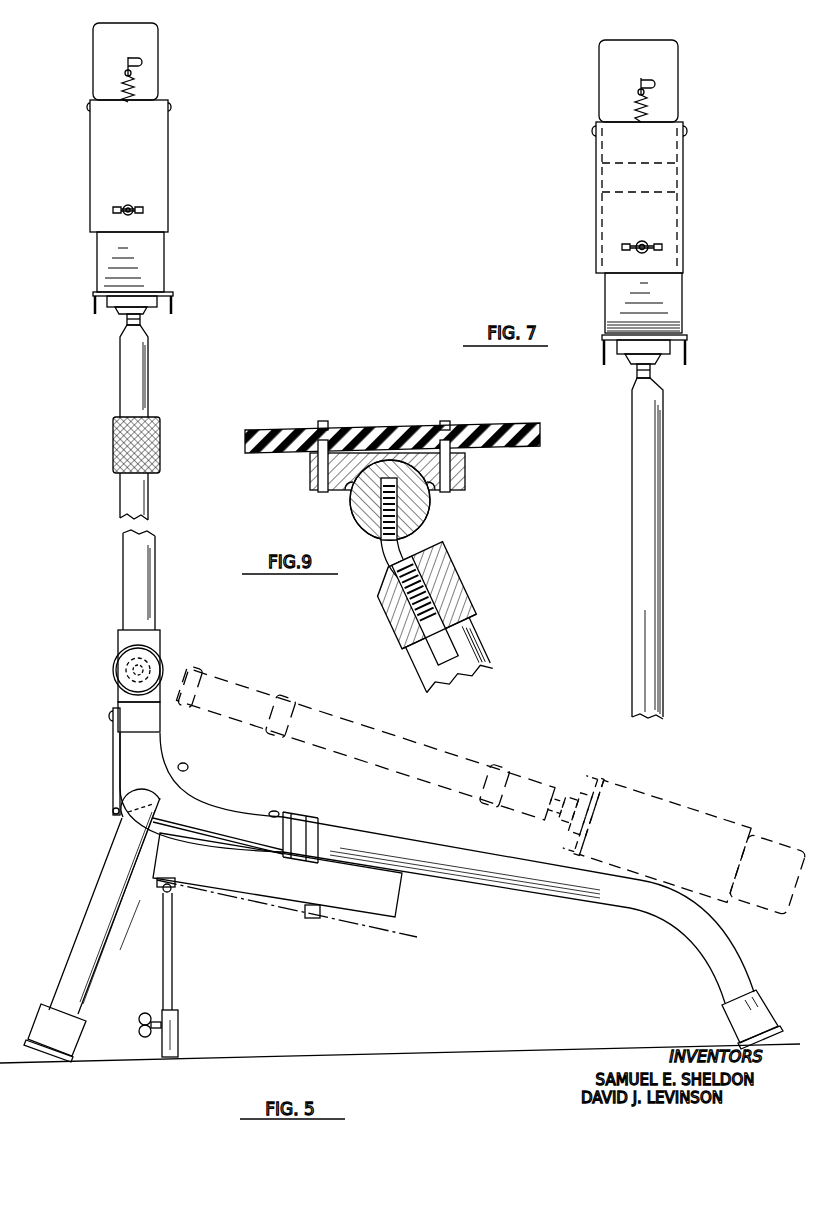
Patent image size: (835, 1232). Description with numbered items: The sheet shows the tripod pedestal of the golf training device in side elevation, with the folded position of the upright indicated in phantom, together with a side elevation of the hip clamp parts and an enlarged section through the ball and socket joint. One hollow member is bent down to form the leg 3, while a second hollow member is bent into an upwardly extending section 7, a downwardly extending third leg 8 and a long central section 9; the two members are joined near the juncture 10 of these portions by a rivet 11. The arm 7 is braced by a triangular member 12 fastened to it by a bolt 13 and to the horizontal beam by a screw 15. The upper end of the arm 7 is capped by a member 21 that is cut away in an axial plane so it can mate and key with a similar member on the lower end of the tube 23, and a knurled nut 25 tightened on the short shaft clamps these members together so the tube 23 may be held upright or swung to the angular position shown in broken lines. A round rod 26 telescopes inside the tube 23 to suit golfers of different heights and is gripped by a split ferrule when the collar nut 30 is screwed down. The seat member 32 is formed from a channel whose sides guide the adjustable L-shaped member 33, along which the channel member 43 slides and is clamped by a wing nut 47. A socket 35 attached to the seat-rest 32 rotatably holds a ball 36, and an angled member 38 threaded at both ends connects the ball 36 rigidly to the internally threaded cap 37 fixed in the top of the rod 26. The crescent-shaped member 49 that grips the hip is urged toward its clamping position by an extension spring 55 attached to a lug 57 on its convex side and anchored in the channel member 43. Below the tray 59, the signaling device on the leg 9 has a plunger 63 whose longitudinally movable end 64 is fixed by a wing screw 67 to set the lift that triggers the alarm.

In FIG. 5, the leg 3 is at (105, 880).
In FIG. 5, the upwardly extending section 7 is at (160, 740).
In FIG. 5, the third leg 8 is at (720, 970).
In FIG. 5, the central section 9 is at (563, 885).
In FIG. 5, the joint 10 is at (135, 812).
In FIG. 5, the rivet 11 is at (186, 768).
In FIG. 5, the triangular member 12 is at (113, 760).
In FIG. 5, the bolt 13 is at (110, 717).
In FIG. 5, the screw 15 is at (112, 810).
In FIG. 5, the cap member 21 is at (125, 708).
In FIG. 5, the tube 23 is at (148, 578).
In FIG. 5, the knurled nut 25 is at (118, 655).
In FIG. 5, the round rod 26 is at (140, 382).
In FIG. 7, the round rod 26 is at (652, 510).
In FIG. 9, the round rod 26 is at (480, 625).
In FIG. 5, the collar nut member 30 is at (112, 448).
In FIG. 5, the seat member 32 is at (174, 302).
In FIG. 7, the seat member 32 is at (690, 348).
In FIG. 9, the seat member 32 is at (273, 453).
In FIG. 5, the L-shaped member 33 is at (160, 265).
In FIG. 7, the L-shaped member 33 is at (672, 300).
In FIG. 5, the socket 35 is at (120, 312).
In FIG. 7, the socket 35 is at (643, 359).
In FIG. 9, the socket 35 is at (432, 503).
In FIG. 9, the ball 36 is at (355, 500).
In FIG. 9, the internally threaded cap 37 is at (438, 553).
In FIG. 5, the angled member 38 is at (142, 320).
In FIG. 7, the angled member 38 is at (636, 372).
In FIG. 9, the angled member 38 is at (398, 548).
In FIG. 5, the channel member 43 is at (158, 163).
In FIG. 7, the channel member 43 is at (672, 175).
In FIG. 5, the wing nut 47 is at (128, 200).
In FIG. 7, the wing nut 47 is at (641, 240).
In FIG. 5, the crescent-shaped member 49 is at (150, 43).
In FIG. 7, the crescent-shaped member 49 is at (668, 65).
In FIG. 5, the extension spring 55 is at (136, 80).
In FIG. 7, the extension spring 55 is at (648, 100).
In FIG. 5, the lug 57 is at (126, 60).
In FIG. 7, the lug 57 is at (636, 78).
In FIG. 5, the tray 59 is at (370, 898).
In FIG. 5, the plunger 63 is at (173, 970).
In FIG. 5, the longitudinally movable end 64 is at (180, 1035).
In FIG. 5, the wing screw 67 is at (148, 1016).